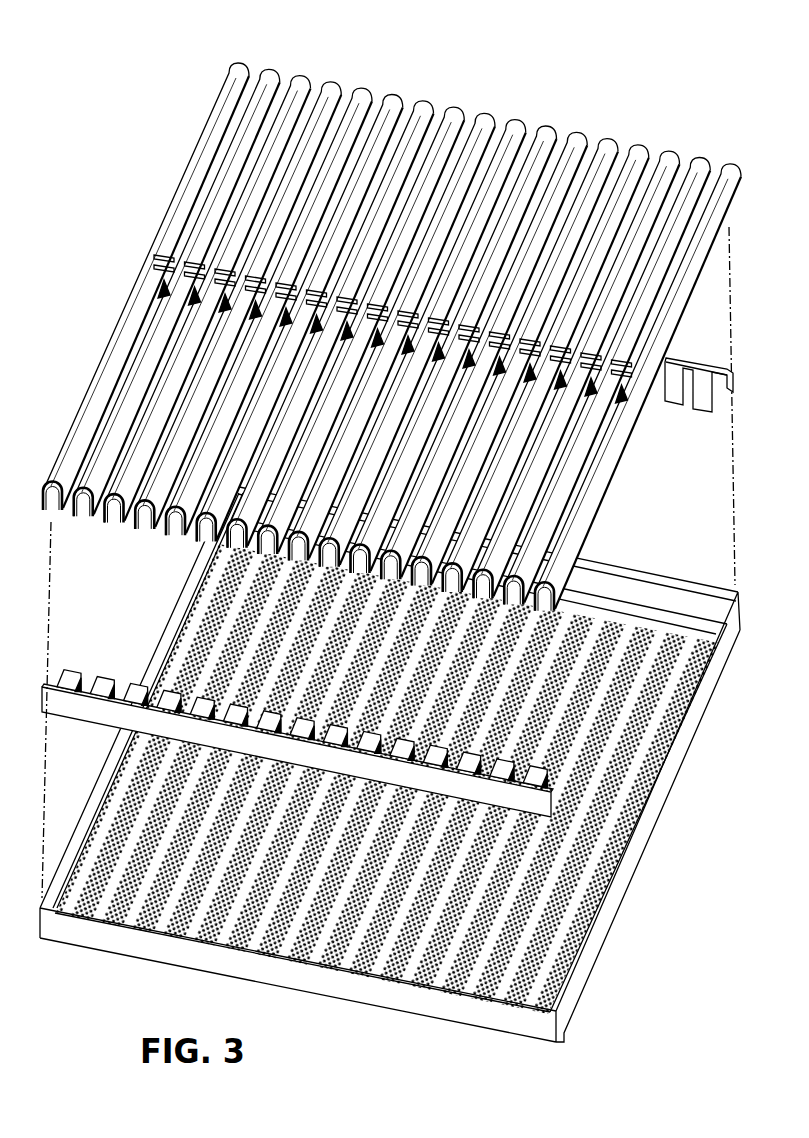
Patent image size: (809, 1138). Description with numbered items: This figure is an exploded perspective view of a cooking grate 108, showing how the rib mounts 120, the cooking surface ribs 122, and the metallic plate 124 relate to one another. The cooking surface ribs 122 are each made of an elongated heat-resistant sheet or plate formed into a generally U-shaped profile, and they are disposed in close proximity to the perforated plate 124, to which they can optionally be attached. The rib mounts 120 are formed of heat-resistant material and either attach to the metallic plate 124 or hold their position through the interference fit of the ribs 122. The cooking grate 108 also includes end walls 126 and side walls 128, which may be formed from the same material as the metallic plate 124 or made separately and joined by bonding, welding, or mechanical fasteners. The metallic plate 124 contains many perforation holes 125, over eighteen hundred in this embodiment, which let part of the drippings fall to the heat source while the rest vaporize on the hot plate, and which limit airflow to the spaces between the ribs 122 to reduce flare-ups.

The cooking grate 108 is at (575, 84).
The rib mounts 120 is at (725, 387).
The cooking surface ribs 122 is at (230, 82).
The metallic plate 124 is at (598, 832).
The perforation holes 125 is at (653, 762).
The end walls 126 is at (577, 983).
The side walls 128 is at (492, 1020).